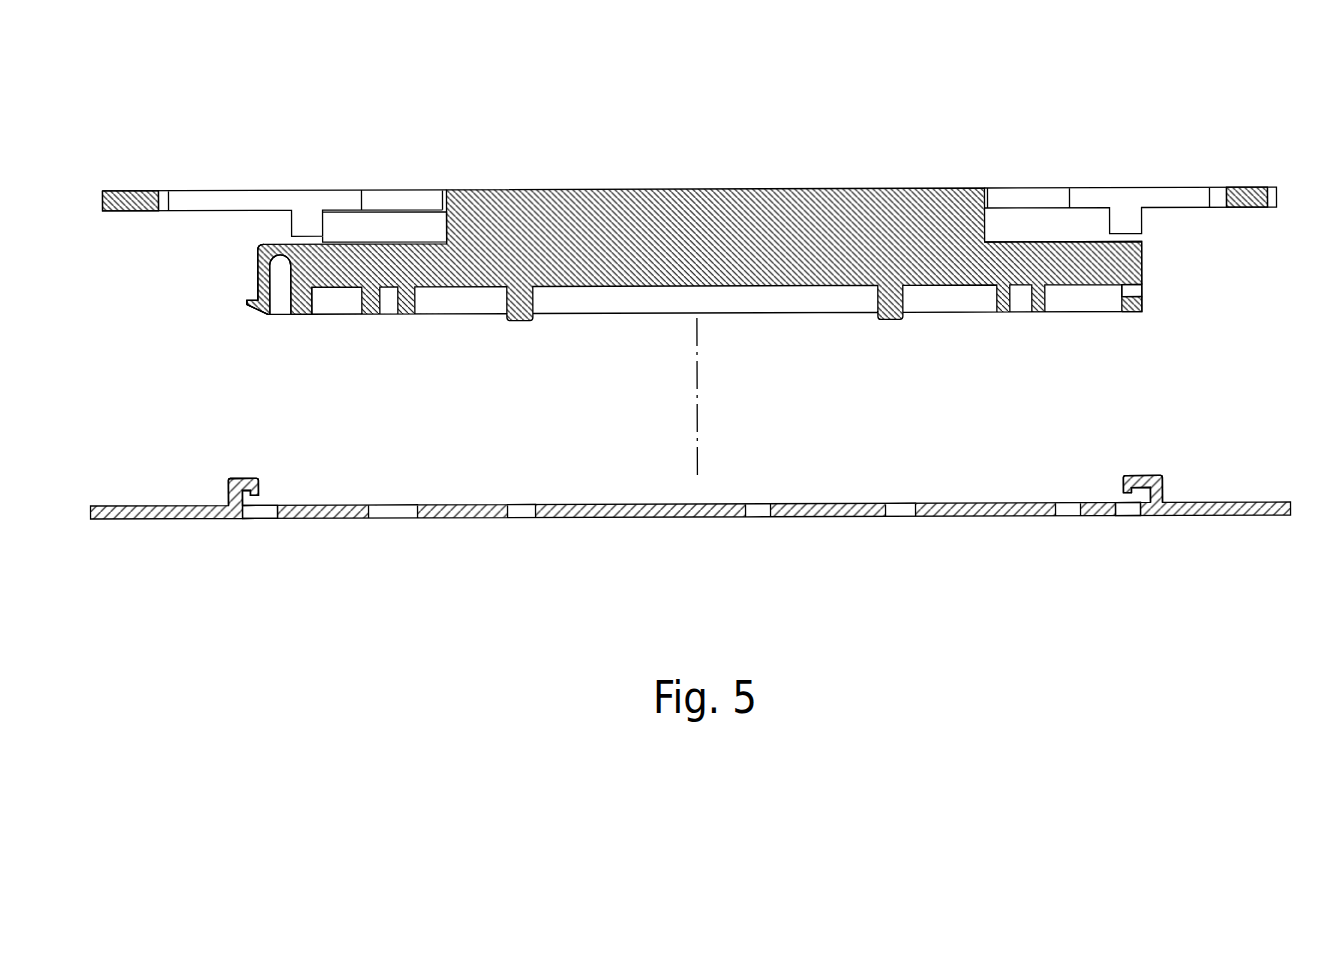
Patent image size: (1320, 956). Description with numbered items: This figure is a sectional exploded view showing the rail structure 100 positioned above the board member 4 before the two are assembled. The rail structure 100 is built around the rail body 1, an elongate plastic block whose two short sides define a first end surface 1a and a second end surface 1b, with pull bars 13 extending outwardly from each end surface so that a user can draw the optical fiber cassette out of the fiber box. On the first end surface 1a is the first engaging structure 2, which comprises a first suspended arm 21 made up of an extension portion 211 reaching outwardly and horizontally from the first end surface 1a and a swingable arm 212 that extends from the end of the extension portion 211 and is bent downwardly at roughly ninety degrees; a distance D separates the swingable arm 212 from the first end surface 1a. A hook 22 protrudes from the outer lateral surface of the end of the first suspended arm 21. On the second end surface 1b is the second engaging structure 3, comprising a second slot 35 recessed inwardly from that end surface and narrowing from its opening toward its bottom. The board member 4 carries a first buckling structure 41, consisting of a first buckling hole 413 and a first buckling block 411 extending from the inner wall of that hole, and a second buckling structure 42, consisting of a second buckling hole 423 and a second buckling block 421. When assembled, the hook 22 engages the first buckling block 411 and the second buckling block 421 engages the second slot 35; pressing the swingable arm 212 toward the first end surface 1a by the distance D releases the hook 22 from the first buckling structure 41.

The rail structure 100 is at (603, 189).
The rail body 1 is at (731, 230).
The pull bar 13 is at (200, 205).
The first end surface 1a is at (302, 314).
The second end surface 1b is at (1143, 312).
The first engaging structure 2 is at (265, 314).
The first suspended arm 21 is at (162, 250).
The extension portion 211 is at (258, 247).
The swingable arm 212 is at (258, 281).
The hook 22 is at (248, 303).
The distance D is at (280, 303).
The second engaging structure 3 is at (1143, 280).
The second slot 35 is at (1143, 290).
The board member 4 is at (698, 518).
The first buckling structure 41 is at (315, 602).
The first buckling block 411 is at (250, 488).
The first buckling hole 413 is at (270, 512).
The second buckling structure 42 is at (1170, 602).
The second buckling block 421 is at (1138, 488).
The second buckling hole 423 is at (1122, 511).